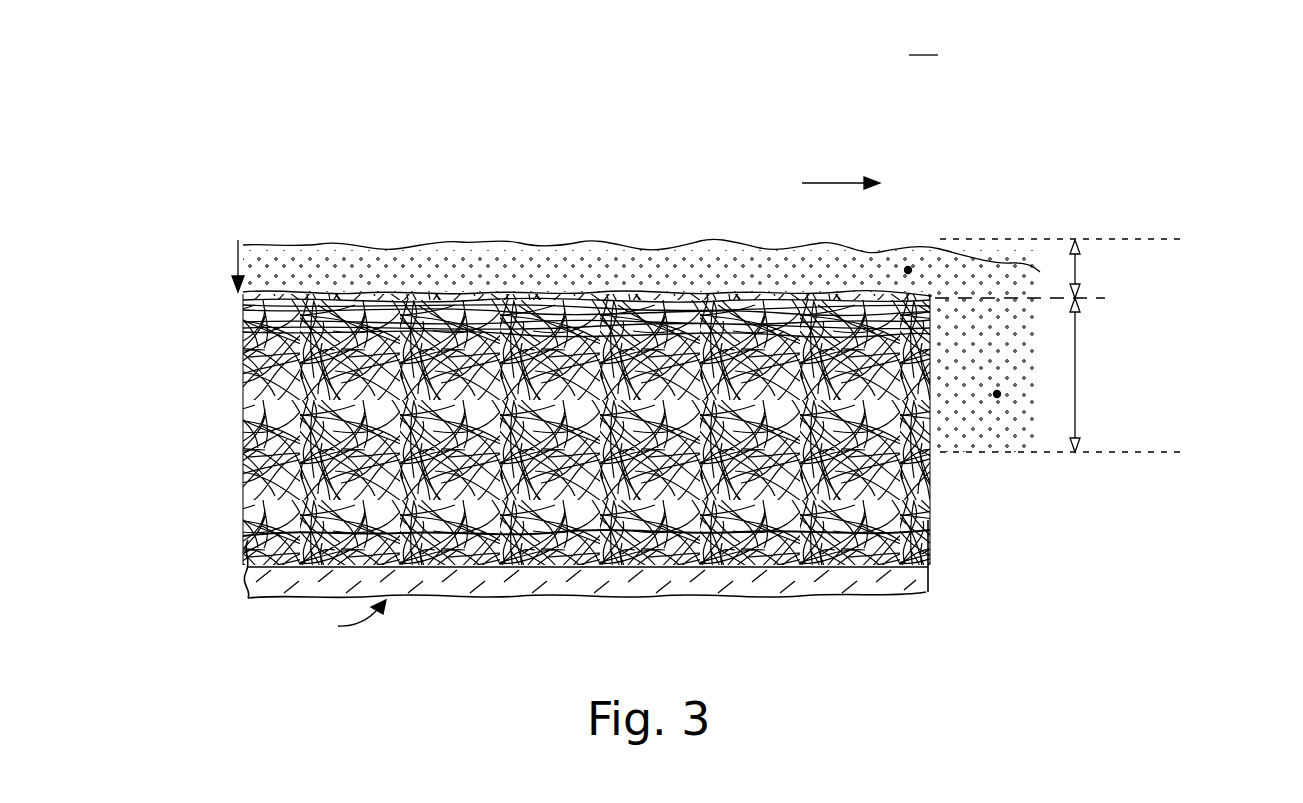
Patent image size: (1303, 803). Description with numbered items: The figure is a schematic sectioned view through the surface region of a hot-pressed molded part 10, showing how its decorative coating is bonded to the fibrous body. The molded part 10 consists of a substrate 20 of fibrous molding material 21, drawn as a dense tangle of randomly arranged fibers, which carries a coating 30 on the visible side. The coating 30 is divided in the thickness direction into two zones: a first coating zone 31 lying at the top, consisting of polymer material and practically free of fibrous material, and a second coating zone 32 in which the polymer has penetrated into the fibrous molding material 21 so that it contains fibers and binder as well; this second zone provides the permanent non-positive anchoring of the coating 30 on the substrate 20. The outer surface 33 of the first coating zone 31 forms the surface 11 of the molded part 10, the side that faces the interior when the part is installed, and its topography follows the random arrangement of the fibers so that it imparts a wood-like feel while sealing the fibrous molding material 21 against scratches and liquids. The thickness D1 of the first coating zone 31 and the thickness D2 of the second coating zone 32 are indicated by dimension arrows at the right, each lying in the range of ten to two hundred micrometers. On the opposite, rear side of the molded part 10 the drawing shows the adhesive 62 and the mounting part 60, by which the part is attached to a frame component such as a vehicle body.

The molded part 10 is at (693, 155).
The surface 11 is at (432, 240).
The surface of the first coating zone 33 is at (0, 0).
The first coating zone 31 is at (908, 270).
The second coating zone 32 is at (997, 394).
The coating 30 is at (1180, 240).
The thickness of the first coating zone D1 is at (1085, 267).
The thickness of the second coating zone D2 is at (1077, 372).
The substrate 20 is at (210, 293).
The fibrous molding material 21 is at (0, 0).
The adhesive 62 is at (920, 560).
The mounting part 60 is at (915, 590).